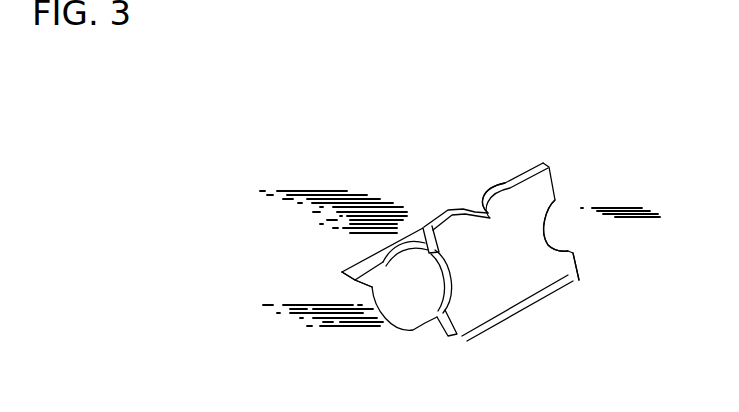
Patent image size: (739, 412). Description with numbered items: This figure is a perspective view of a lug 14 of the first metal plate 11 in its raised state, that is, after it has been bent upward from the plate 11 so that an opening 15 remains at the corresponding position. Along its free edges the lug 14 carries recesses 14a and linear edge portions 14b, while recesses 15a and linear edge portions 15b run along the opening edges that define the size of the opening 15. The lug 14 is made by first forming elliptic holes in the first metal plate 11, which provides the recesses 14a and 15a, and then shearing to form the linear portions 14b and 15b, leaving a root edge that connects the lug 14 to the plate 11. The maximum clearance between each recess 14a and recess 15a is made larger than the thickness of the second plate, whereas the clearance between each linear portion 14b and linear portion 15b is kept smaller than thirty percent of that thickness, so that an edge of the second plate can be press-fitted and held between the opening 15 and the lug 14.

The first metal plate 11 is at (312, 215).
The lug 14 is at (522, 202).
The recess 14a is at (486, 205).
The linear edge portion 14b is at (437, 212).
The opening 15 is at (421, 297).
The recess 15a is at (404, 212).
The linear edge portion 15b is at (353, 288).